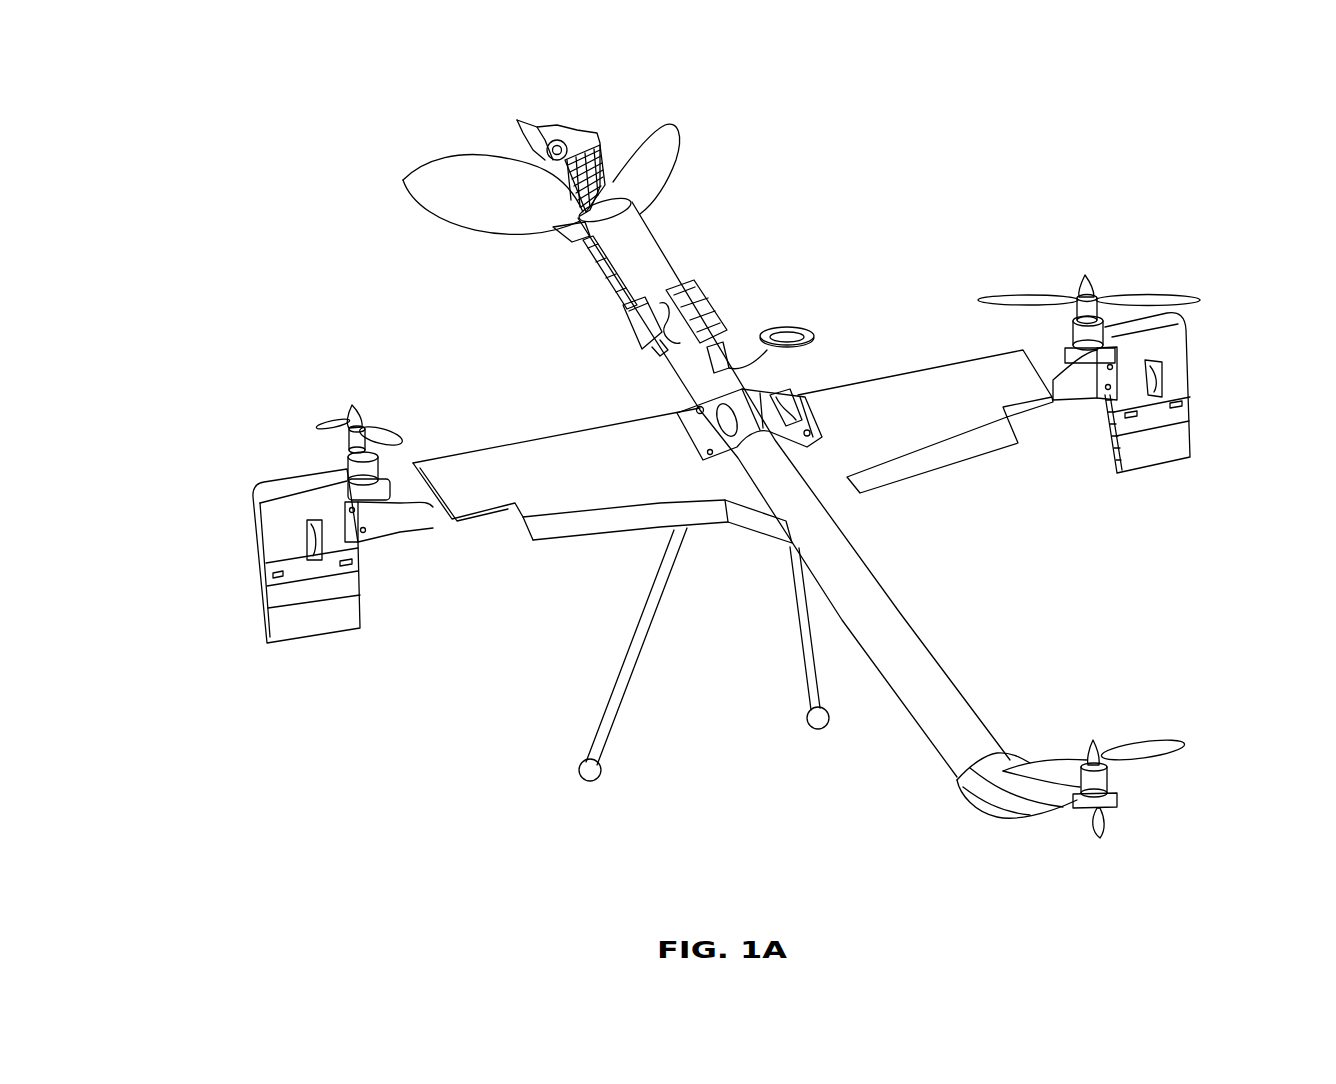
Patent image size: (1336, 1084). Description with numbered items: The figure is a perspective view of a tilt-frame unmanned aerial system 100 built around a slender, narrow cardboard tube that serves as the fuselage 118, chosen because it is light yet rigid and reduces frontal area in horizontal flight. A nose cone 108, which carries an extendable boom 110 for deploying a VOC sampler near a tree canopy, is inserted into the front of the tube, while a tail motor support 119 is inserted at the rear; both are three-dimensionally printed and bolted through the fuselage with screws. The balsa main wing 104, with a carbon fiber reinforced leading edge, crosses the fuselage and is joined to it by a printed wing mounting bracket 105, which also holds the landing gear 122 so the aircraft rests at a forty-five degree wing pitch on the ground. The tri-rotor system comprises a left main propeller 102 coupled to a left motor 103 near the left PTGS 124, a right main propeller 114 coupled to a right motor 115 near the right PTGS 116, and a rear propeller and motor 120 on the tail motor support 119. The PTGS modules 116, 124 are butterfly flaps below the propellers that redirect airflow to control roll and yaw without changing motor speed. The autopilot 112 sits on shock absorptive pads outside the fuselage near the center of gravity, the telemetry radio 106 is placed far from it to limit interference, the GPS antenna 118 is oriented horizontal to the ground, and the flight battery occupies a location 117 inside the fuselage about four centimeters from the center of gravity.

The tilt-frame unmanned aerial system 100 is at (905, 167).
The left main propeller 102 is at (343, 418).
The left motor 103 is at (350, 457).
The main wing 104 is at (520, 453).
The wing mounting bracket 105 is at (710, 452).
The telemetry radio 106 is at (630, 320).
The nose cone 108 is at (460, 158).
The extendable boom 110 is at (604, 102).
The autopilot 112 is at (679, 289).
The right main propeller 114 is at (1023, 297).
The right motor 115 is at (1090, 330).
The right PTGS 116 is at (1137, 468).
The battery location 117 is at (813, 503).
The fuselage 118 is at (922, 600).
The tail motor support 119 is at (1023, 823).
The rear propeller and motor 120 is at (1090, 738).
The landing gear 122 is at (823, 731).
The left PTGS 124 is at (312, 630).